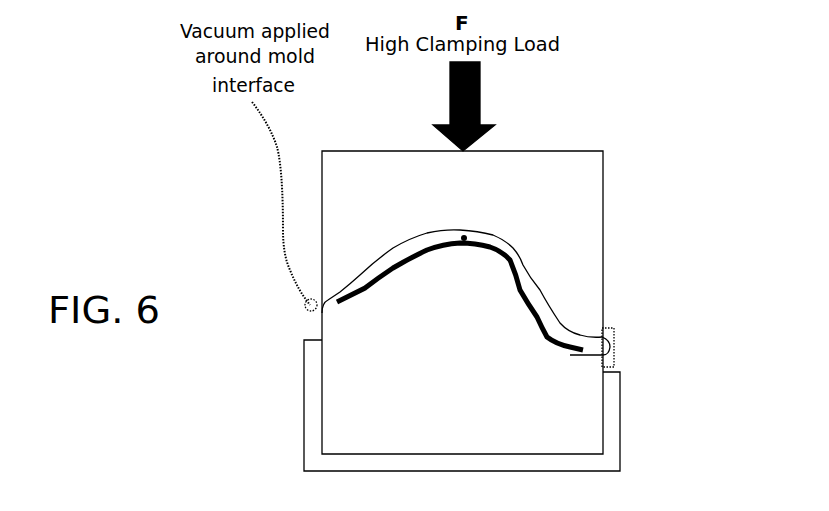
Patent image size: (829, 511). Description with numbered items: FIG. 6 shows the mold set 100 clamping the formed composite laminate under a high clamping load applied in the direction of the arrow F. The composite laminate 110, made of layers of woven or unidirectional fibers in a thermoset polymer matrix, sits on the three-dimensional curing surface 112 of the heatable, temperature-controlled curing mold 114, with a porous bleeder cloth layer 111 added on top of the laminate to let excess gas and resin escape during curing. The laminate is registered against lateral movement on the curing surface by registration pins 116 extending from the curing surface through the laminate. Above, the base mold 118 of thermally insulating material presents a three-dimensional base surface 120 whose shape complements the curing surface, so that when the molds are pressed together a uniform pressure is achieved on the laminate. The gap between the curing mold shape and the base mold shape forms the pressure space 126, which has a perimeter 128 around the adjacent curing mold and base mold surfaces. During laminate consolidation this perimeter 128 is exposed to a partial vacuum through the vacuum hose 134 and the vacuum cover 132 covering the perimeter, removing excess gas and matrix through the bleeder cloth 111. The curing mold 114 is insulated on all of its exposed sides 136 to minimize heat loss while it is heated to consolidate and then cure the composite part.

The mold set 100 is at (638, 174).
The composite laminate 110 is at (563, 342).
The bleeder cloth layer 111 is at (563, 342).
The curing surface 112 is at (325, 310).
The curing mold 114 is at (578, 396).
The registration pins 116 is at (460, 232).
The base mold 118 is at (573, 162).
The base surface 120 is at (530, 266).
The pressure space 126 is at (322, 312).
The perimeter 128 is at (612, 342).
The vacuum cover 132 is at (322, 313).
The vacuum hose 134 is at (278, 178).
The exposed sides 136 is at (610, 435).